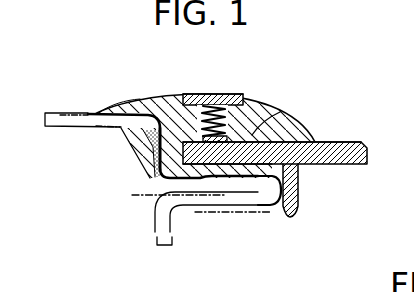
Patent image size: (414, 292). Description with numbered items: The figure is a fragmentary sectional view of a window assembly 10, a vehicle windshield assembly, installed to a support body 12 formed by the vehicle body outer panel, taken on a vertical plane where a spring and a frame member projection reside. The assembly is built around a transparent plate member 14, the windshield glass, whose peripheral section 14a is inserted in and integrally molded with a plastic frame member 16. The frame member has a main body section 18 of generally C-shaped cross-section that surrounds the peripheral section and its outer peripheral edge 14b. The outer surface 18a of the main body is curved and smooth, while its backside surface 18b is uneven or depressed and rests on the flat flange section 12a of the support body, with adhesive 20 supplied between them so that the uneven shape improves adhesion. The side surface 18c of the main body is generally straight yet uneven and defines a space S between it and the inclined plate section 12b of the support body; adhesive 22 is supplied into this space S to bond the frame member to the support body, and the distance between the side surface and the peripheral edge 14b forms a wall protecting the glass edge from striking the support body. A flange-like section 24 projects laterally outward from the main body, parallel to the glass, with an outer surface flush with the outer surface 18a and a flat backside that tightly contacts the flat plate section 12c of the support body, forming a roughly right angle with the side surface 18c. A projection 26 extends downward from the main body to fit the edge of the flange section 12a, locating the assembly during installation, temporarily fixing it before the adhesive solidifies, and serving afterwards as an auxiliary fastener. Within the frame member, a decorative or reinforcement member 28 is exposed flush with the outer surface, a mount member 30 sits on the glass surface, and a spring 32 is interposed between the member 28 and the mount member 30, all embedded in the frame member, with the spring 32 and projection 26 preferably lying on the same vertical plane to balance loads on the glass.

The window assembly 10 is at (224, 107).
The support body 12 is at (255, 207).
The flat flange section 12a is at (190, 206).
The inclined plate section 12b is at (148, 197).
The flat plate section 12c is at (62, 112).
The plate member 14 is at (345, 166).
The peripheral section 14a is at (285, 141).
The outer peripheral edge 14b is at (160, 182).
The frame member 16 is at (275, 109).
The main body section 18 is at (250, 113).
The outer surface 18a is at (242, 100).
The backside surface 18b is at (246, 179).
The side surface 18c is at (152, 182).
The adhesive 20 is at (214, 207).
The adhesive 22 is at (153, 159).
The flange-like section 24 is at (124, 107).
The projection 26 is at (296, 205).
The decorative or reinforcement member 28 is at (195, 94).
The mount member 30 is at (142, 146).
The spring 32 is at (278, 113).
The space S is at (141, 130).